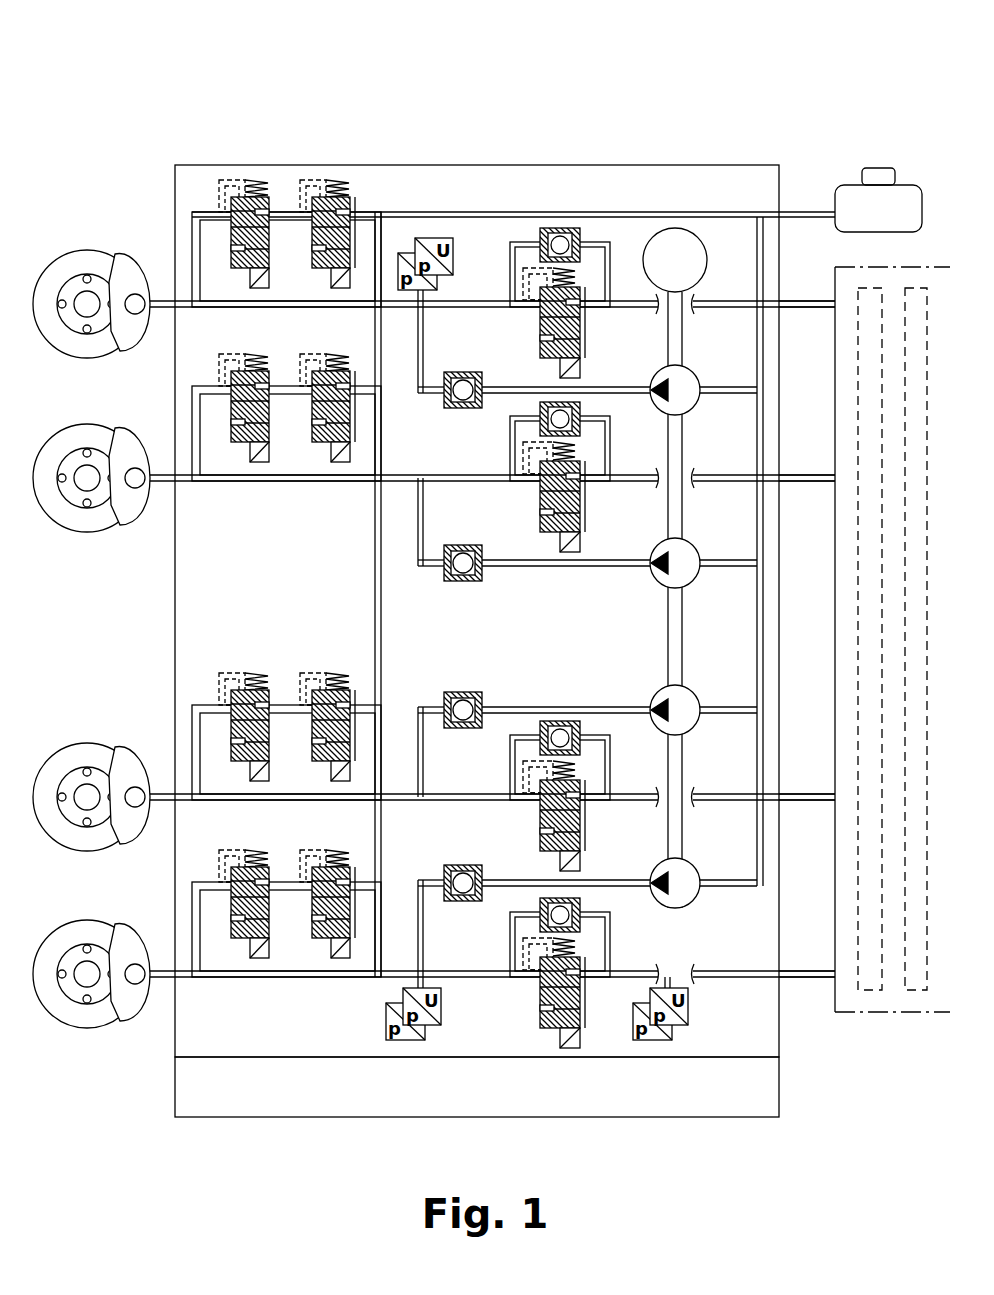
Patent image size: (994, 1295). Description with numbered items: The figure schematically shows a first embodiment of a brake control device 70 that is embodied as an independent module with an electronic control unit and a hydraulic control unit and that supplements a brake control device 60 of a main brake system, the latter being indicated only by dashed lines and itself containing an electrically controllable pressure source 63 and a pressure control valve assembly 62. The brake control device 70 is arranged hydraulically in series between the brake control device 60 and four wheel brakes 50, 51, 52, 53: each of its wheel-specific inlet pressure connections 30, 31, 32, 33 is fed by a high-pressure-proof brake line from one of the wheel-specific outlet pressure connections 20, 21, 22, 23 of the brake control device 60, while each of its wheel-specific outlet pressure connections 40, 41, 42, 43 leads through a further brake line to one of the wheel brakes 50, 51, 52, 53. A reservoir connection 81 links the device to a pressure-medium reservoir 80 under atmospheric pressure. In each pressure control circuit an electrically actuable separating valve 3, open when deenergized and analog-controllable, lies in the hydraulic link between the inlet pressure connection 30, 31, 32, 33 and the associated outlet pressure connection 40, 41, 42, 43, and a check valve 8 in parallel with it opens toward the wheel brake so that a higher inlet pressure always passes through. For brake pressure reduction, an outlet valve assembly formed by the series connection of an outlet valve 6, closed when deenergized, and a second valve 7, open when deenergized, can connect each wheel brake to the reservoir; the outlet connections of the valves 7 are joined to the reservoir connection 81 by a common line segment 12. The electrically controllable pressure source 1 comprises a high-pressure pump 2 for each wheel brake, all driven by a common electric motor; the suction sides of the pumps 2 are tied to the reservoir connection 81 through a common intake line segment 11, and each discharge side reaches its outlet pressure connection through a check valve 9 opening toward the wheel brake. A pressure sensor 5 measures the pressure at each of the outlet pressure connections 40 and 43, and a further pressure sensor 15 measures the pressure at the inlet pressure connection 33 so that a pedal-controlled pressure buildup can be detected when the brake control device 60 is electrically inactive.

The electrically controllable pressure source 1 is at (690, 365).
The high-pressure pump 2 is at (688, 405).
The separating valve 3 is at (578, 331).
The pressure sensor 5 is at (453, 256).
The outlet valve 6 is at (231, 222).
The second valve 7 is at (312, 222).
The check valve 8 is at (582, 238).
The check valve 9 is at (463, 409).
The common intake line segment 11 is at (757, 270).
The common line segment 12 is at (430, 207).
The pressure sensor 15 is at (690, 1008).
The outlet pressure connection 20 is at (829, 316).
The outlet pressure connection 21 is at (829, 490).
The outlet pressure connection 22 is at (829, 810).
The outlet pressure connection 23 is at (829, 986).
The inlet pressure connection 30 is at (788, 299).
The inlet pressure connection 31 is at (788, 473).
The inlet pressure connection 32 is at (788, 792).
The inlet pressure connection 33 is at (788, 969).
The outlet pressure connection 40 is at (168, 298).
The outlet pressure connection 41 is at (168, 486).
The outlet pressure connection 42 is at (168, 790).
The outlet pressure connection 43 is at (168, 984).
The wheel brake 50 is at (122, 252).
The wheel brake 51 is at (122, 527).
The wheel brake 52 is at (122, 746).
The wheel brake 53 is at (122, 1022).
The brake control device of the main brake system 60 is at (840, 1016).
The pressure control valve assembly 62 is at (870, 990).
The electrically controllable pressure source 63 is at (915, 990).
The brake control device 70 is at (690, 118).
The pressure-medium reservoir 80 is at (900, 193).
The reservoir connection 81 is at (787, 205).